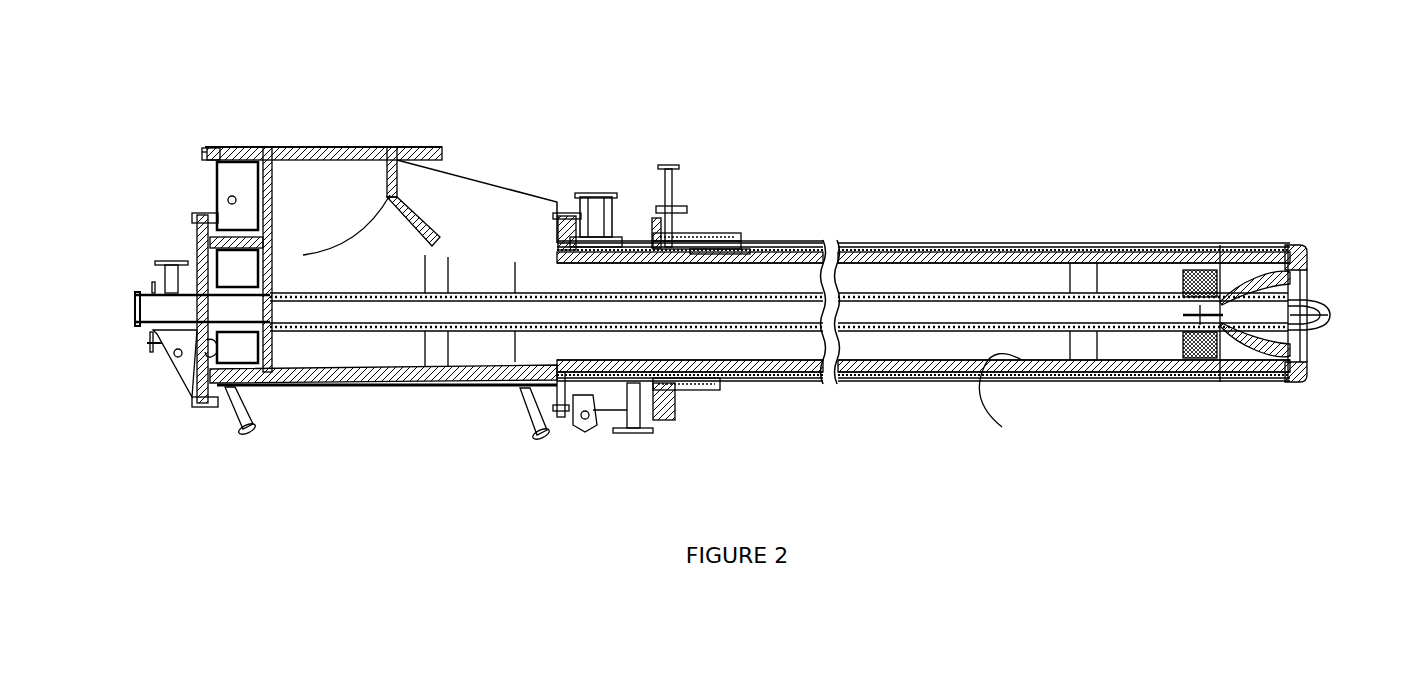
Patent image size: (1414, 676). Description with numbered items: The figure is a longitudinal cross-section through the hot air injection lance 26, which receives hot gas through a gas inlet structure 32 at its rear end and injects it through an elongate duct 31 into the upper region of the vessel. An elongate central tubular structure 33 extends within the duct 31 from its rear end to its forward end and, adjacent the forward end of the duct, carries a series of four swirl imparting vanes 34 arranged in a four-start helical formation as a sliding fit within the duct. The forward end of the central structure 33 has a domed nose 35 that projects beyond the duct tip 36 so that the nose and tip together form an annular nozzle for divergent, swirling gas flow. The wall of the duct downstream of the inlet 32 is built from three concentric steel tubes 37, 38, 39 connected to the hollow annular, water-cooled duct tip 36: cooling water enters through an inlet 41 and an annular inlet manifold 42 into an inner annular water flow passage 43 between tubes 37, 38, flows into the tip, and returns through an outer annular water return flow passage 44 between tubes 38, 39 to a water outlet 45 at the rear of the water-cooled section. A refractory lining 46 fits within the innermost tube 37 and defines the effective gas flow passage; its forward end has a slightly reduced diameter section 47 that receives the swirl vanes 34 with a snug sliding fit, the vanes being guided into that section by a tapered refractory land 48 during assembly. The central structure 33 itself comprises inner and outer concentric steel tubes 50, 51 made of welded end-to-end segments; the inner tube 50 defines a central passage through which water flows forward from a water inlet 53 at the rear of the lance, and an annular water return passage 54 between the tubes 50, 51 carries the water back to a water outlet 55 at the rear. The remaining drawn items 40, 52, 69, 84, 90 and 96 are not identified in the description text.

The hot air injection lance 26 is at (790, 232).
The elongate duct 31 is at (733, 273).
The gas inlet structure 32 is at (353, 165).
The elongate central tubular structure 33 is at (1022, 288).
The swirl imparting vanes 34 is at (1222, 262).
The domed nose 35 is at (1348, 291).
The duct tip 36 is at (1291, 234).
The innermost steel tube 37 is at (773, 368).
The intermediate steel tube 38 is at (805, 382).
The outer steel tube 39 is at (815, 383).
The lower end cap 40 is at (1300, 390).
The water inlet 41 is at (610, 195).
The annular inlet manifold 42 is at (607, 385).
The inner annular water flow passage 43 is at (745, 252).
The outer annular water return flow passage 44 is at (735, 384).
The water outlet 45 is at (635, 432).
The refractory lining 46 is at (693, 257).
The reduced diameter section 47 is at (1103, 384).
The tapered refractory land 48 is at (1080, 277).
The inner steel tube 50 is at (905, 300).
The outer steel tube 51 is at (897, 293).
The inner tube inlet section 52 is at (307, 308).
The water inlet 53 is at (145, 310).
The annular water return passage 54 is at (423, 331).
The water outlet 55 is at (170, 261).
The inner tube lower wall 69 is at (373, 331).
The upper seal block 84 is at (1180, 338).
The mounting plates 90 is at (720, 260).
The lower seal block 96 is at (1222, 358).